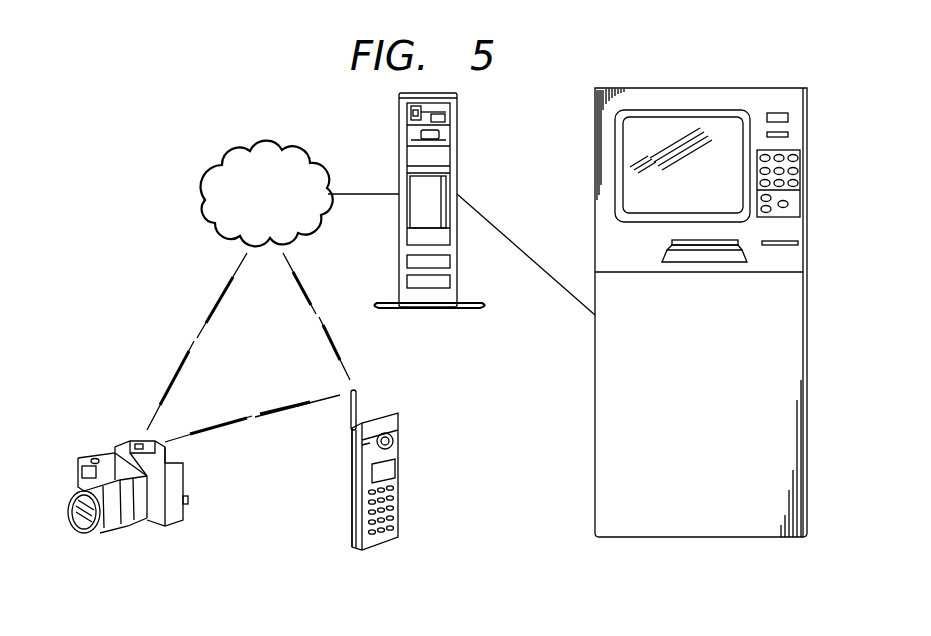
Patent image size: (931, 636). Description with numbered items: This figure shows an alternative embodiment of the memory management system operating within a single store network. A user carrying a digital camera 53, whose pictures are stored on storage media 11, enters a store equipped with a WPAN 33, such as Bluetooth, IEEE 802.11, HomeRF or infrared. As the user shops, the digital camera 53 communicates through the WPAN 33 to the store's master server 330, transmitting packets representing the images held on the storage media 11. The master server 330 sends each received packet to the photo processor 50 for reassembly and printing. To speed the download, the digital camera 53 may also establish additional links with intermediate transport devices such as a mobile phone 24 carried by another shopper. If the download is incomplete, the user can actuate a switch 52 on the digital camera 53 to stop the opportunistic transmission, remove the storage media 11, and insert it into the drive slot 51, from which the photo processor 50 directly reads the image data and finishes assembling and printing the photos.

The WPAN 33 is at (234, 151).
The master server 330 is at (457, 152).
The drive slot 51 is at (788, 118).
The photo processor 50 is at (719, 491).
The digital camera 53 is at (134, 448).
The switch 52 is at (80, 478).
The storage media 11 is at (189, 502).
The mobile phone 24 is at (352, 495).